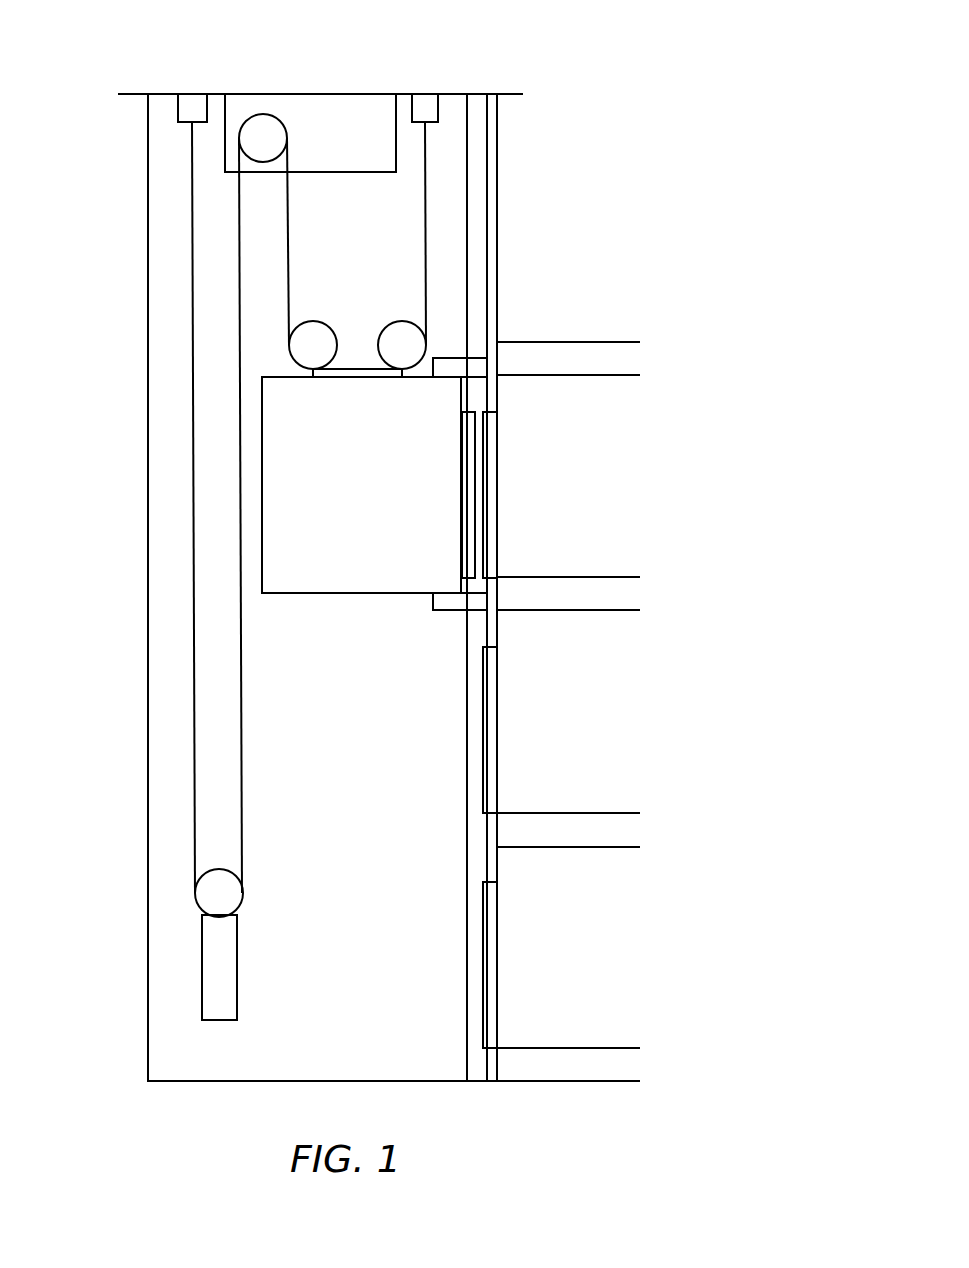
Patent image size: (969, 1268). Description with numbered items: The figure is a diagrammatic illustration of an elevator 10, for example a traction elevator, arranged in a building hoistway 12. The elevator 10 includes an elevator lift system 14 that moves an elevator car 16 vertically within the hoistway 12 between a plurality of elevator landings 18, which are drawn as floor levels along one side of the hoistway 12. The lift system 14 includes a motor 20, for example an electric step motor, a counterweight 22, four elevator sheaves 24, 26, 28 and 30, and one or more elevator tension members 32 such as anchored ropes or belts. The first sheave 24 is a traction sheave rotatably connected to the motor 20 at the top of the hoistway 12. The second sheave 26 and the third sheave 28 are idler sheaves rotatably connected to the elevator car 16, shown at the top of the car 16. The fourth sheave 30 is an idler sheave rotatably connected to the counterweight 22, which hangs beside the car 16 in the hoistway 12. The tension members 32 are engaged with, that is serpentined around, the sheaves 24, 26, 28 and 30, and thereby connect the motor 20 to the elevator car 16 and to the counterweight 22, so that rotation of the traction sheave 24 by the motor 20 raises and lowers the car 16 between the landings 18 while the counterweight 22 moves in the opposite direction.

The elevator 10 is at (76, 73).
The building hoistway 12 is at (345, 1007).
The elevator lift system 14 is at (442, 173).
The elevator car 16 is at (387, 485).
The elevator landings 18 is at (550, 498).
The motor 20 is at (330, 108).
The counterweight 22 is at (202, 977).
The first sheave 24 is at (263, 114).
The second sheave 26 is at (315, 322).
The third sheave 28 is at (402, 322).
The fourth sheave 30 is at (197, 907).
The elevator tension members 32 is at (242, 697).